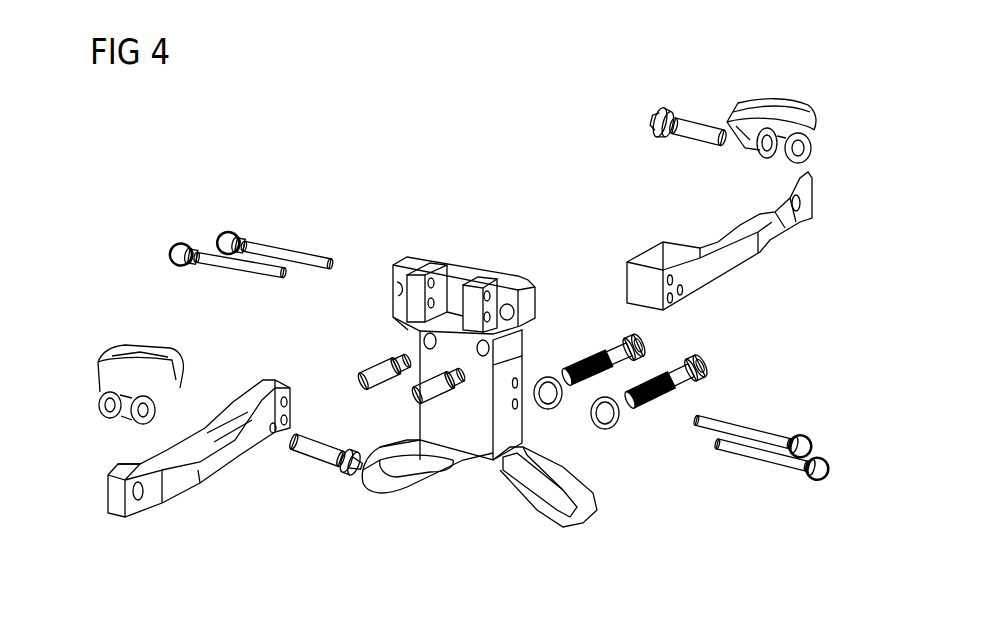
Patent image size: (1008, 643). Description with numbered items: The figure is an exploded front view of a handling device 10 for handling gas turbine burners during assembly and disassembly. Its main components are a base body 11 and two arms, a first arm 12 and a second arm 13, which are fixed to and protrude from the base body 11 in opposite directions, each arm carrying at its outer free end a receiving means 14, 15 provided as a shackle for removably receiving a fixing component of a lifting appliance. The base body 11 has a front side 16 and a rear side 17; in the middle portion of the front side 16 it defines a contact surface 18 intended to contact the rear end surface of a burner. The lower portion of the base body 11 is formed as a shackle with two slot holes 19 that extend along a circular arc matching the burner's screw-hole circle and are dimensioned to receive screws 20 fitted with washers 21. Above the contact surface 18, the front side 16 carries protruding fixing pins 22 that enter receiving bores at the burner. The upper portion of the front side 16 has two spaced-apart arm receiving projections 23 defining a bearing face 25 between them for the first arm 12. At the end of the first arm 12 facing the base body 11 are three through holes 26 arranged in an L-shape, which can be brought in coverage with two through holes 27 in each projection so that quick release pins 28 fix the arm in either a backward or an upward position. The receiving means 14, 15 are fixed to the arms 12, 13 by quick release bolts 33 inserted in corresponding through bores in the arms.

The handling device 10 is at (488, 116).
The base body 11 is at (548, 260).
The first arm 12 is at (215, 468).
The second arm 13 is at (735, 265).
The receiving means 14 is at (116, 347).
The receiving means 15 is at (764, 116).
The front side 16 is at (412, 332).
The rear side 17 is at (512, 276).
The contact surface 18 is at (470, 441).
The slot holes 19 is at (407, 463).
The screws 20 is at (592, 352).
The washers 21 is at (556, 410).
The fixing pins 22 is at (418, 394).
The arm receiving projections 23 is at (478, 286).
The bearing face 25 is at (455, 316).
The through holes 26 is at (284, 396).
The through holes 27 is at (431, 302).
The quick release pins 28 is at (268, 266).
The quick release bolts 33 is at (310, 453).